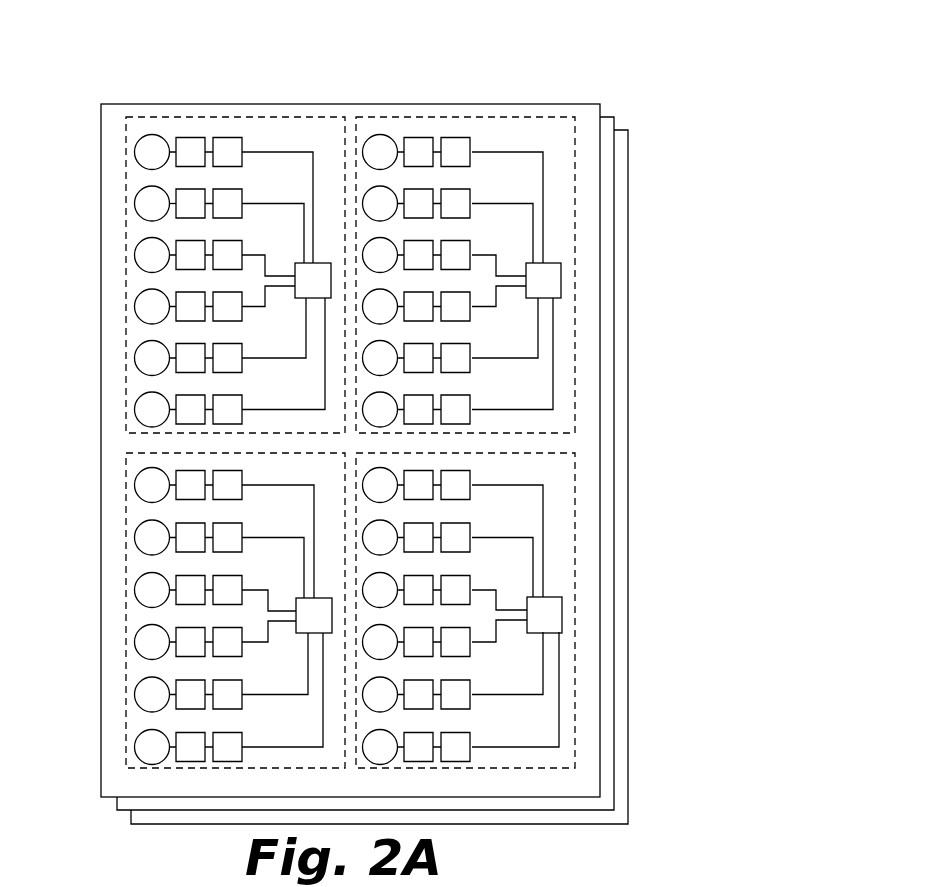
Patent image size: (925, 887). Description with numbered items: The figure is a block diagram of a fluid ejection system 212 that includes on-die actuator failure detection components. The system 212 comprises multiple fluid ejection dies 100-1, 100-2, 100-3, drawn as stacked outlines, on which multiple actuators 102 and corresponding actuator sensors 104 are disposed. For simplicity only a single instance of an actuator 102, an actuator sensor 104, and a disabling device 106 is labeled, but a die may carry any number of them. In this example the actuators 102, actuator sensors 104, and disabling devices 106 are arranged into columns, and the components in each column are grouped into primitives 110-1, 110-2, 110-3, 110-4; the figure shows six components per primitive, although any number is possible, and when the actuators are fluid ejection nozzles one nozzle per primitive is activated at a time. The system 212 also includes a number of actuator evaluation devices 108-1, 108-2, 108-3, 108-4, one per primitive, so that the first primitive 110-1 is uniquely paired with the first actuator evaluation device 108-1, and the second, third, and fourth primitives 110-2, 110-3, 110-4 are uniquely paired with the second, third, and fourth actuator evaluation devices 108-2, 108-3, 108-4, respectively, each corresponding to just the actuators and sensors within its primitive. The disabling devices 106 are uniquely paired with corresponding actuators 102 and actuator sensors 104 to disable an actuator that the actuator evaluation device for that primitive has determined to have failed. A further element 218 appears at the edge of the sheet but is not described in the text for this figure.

The fluid ejection system 212 is at (148, 69).
The fluid ejection die 100-1 is at (476, 106).
The fluid ejection die 100-2 is at (613, 117).
The fluid ejection die 100-3 is at (628, 150).
The actuator 102 is at (143, 203).
The actuator sensor 104 is at (187, 212).
The disabling device 106 is at (227, 150).
The first actuator evaluation device 108-1 is at (319, 263).
The second actuator evaluation device 108-2 is at (542, 279).
The third actuator evaluation device 108-3 is at (307, 614).
The fourth actuator evaluation device 108-4 is at (543, 611).
The first primitive 110-1 is at (128, 343).
The second primitive 110-2 is at (570, 317).
The third primitive 110-3 is at (127, 717).
The fourth primitive 110-4 is at (570, 648).
The substrate 218 is at (110, 885).